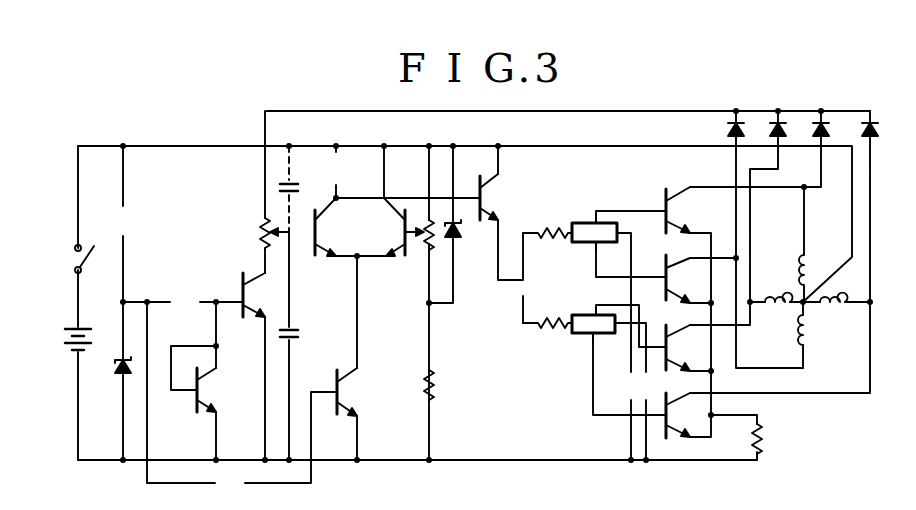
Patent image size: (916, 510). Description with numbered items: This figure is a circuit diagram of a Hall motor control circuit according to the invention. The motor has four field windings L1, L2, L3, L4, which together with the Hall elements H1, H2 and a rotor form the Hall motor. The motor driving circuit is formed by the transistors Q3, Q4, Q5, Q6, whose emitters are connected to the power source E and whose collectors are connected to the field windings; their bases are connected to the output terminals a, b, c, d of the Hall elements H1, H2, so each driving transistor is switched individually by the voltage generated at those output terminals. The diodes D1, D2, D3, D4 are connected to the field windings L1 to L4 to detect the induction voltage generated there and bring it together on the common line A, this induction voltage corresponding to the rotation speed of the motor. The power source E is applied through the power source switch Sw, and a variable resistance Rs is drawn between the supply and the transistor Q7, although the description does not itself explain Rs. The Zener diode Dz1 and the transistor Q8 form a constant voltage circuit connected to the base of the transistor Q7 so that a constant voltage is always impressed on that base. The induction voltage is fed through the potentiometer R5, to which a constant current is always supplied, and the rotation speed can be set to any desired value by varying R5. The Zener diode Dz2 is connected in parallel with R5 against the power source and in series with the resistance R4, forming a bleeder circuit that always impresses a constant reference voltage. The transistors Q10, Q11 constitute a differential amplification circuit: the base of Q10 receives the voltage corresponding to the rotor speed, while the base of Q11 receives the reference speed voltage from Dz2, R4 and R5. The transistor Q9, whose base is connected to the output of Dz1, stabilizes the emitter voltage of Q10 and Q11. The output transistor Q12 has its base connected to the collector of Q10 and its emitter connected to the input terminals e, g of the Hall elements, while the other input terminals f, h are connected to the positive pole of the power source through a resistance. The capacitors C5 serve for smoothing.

The power source switch Sw is at (71, 259).
The power source E is at (66, 340).
The Zener diode Dz1 is at (109, 371).
The variable resistor Rs is at (260, 233).
The capacitor C5 is at (295, 187).
The transistor Q7 is at (257, 318).
The transistor Q8 is at (206, 391).
The transistor Q9 is at (346, 391).
The transistor Q10 is at (318, 252).
The transistor Q11 is at (403, 252).
The potentiometer R5 is at (432, 238).
The Zener diode Dz2 is at (457, 233).
The output transistor Q12 is at (490, 197).
The resistance R4 is at (444, 385).
The input terminal e is at (547, 222).
The input terminal g is at (547, 313).
The Hall element H1 is at (576, 222).
The Hall element H2 is at (588, 333).
The output terminal a is at (589, 214).
The output terminal b is at (602, 256).
The input terminal f is at (622, 245).
The output terminal c is at (589, 305).
The input terminal h is at (623, 336).
The output terminal d is at (601, 348).
The transistor Q3 is at (670, 200).
The transistor Q4 is at (664, 276).
The transistor Q5 is at (664, 346).
The transistor Q6 is at (676, 428).
The power supply line A is at (582, 111).
The diode D1 is at (821, 111).
The diode D2 is at (778, 111).
The diode D3 is at (736, 111).
The diode D4 is at (870, 111).
The field winding L1 is at (818, 277).
The field winding L2 is at (777, 289).
The field winding L3 is at (789, 330).
The field winding L4 is at (833, 317).